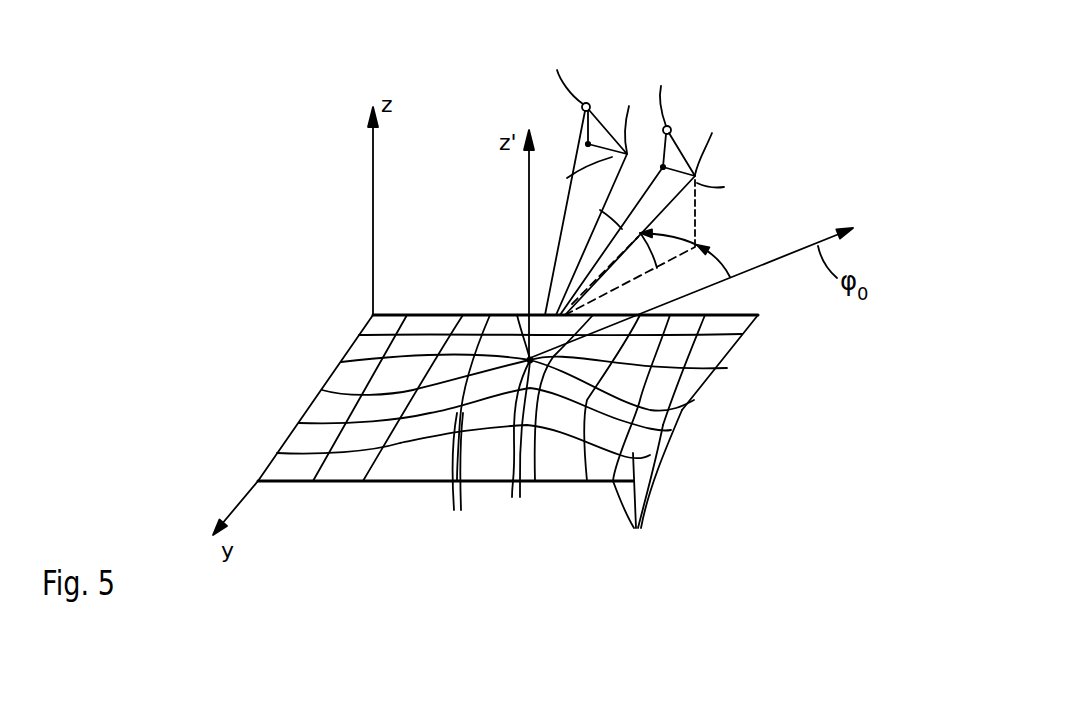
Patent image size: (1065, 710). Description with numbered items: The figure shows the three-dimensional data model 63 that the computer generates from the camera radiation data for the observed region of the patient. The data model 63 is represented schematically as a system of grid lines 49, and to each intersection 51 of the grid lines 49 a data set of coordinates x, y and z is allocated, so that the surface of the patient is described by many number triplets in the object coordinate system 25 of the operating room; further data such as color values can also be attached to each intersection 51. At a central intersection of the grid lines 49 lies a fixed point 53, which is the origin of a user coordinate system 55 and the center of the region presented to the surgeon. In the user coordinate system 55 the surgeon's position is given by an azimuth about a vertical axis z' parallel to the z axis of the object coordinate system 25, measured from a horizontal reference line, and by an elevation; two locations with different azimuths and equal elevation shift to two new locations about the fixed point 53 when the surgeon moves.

The object coordinate system 25 is at (356, 311).
The grid lines 49 is at (647, 486).
The intersections 51 is at (397, 421).
The fixed point 53 is at (519, 316).
The user coordinate system 55 is at (802, 120).
The three-dimensional data model 63 is at (361, 500).